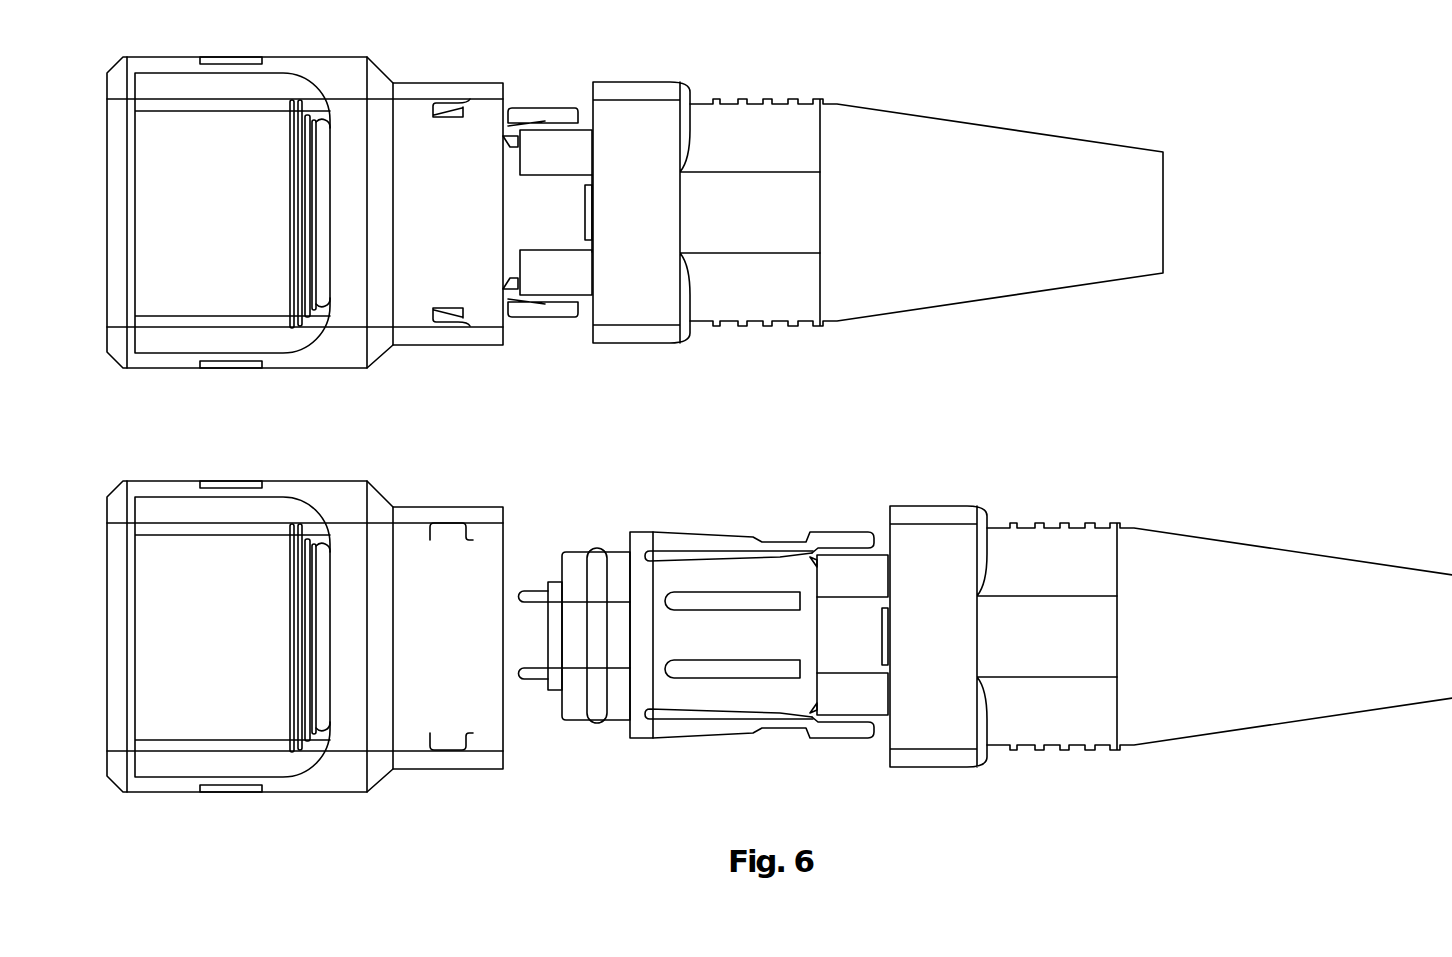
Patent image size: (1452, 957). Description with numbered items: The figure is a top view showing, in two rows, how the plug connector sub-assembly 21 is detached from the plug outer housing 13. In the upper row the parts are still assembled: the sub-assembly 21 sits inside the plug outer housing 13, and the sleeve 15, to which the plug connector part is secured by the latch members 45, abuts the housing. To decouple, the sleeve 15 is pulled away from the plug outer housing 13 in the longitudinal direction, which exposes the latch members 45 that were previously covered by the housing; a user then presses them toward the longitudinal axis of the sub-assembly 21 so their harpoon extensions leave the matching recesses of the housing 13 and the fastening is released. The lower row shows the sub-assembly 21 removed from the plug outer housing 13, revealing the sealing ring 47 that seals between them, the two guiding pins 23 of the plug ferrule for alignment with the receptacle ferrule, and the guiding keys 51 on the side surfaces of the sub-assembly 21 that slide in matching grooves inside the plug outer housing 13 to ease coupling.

The plug outer housing 13 is at (313, 370).
The sleeve 15 is at (1003, 128).
The plug connector sub-assembly 21 is at (522, 193).
The guiding pins 23 is at (522, 680).
The latch member 45 is at (540, 107).
The sealing ring 47 is at (596, 548).
The guiding keys 51 is at (753, 670).